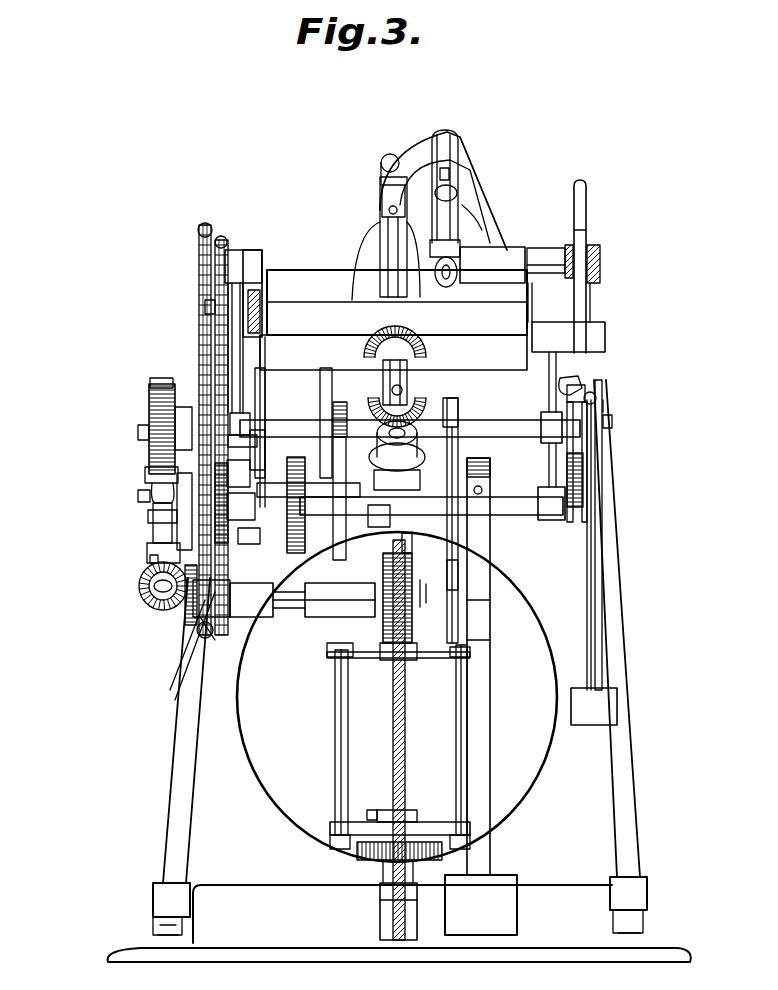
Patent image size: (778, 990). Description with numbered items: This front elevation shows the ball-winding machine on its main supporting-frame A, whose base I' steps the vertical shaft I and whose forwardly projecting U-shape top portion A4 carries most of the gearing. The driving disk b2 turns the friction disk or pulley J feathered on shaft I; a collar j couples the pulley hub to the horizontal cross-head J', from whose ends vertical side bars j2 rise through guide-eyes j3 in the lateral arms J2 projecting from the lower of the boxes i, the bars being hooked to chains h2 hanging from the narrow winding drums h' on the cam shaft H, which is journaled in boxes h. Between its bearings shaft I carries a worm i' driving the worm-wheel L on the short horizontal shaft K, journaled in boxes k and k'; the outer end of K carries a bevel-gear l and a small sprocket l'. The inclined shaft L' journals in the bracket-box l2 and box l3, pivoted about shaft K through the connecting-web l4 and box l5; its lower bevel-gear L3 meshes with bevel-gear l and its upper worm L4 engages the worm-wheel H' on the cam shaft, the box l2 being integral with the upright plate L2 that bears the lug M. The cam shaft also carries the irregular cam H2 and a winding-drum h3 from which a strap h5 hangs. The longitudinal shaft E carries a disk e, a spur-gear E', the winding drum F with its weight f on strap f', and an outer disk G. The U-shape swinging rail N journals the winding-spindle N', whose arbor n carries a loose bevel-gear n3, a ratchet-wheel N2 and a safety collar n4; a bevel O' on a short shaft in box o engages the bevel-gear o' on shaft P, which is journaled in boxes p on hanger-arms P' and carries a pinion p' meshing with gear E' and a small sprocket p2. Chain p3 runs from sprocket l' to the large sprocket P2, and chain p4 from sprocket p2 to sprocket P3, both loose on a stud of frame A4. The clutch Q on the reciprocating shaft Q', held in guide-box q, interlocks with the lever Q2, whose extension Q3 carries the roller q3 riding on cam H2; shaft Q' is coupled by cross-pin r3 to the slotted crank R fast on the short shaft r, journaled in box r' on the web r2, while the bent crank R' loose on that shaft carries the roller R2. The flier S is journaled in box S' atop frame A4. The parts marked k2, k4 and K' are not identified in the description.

The main supporting-frame A is at (399, 671).
The weight f is at (481, 905).
The narrow winding drum F is at (490, 473).
The winding-strap f' is at (490, 619).
The vertical shaft I is at (405, 740).
The base of the main-frame I' is at (384, 900).
The driving disk b2 is at (397, 697).
The friction disk or pulley J is at (389, 852).
The horizontal cross-head J' is at (363, 847).
The vertical side bars j2 is at (348, 752).
The guide-eyes or boxes j3 is at (327, 652).
The lateral bars or arms J2 is at (357, 660).
The collar j is at (410, 816).
The worm-wheel L is at (411, 598).
The boxes i is at (405, 596).
The worm i' is at (426, 603).
The short horizontal shaft K is at (253, 528).
The box k' is at (340, 591).
The box k is at (223, 640).
The rod k2 is at (338, 538).
The disk e is at (370, 522).
The longitudinal shaft E is at (432, 523).
The spur-gear E' is at (256, 547).
The boxes h is at (404, 419).
The narrow winding drums h' is at (441, 512).
The worm-wheel H' is at (301, 423).
The cam shaft H is at (627, 425).
The chain h2 is at (488, 568).
The irregular cam H2 is at (574, 522).
The narrow winding-drum h3 is at (597, 395).
The strap or belt h5 is at (592, 603).
The box k4 is at (594, 706).
The wearing roller or trundle q3 is at (605, 405).
The extension or arm Q3 is at (585, 382).
The clutch lever Q2 is at (595, 266).
The grip-socket or clutch Q is at (597, 264).
The reciprocating shaft Q' is at (566, 282).
The guide-box or bearing q is at (492, 265).
The cross-pin r3 is at (441, 279).
The crank-arm or lever R is at (445, 239).
The box r' is at (474, 186).
The short shaft r is at (473, 184).
The web or arm r2 is at (483, 214).
The bent-arm or crank R' is at (443, 180).
The flier S is at (368, 152).
The roller or trundle R2 is at (382, 205).
The box S' is at (374, 237).
The ball winding-spindle N' is at (369, 261).
The U-shape swinging rail or frame N is at (397, 302).
The ratchet-wheel N2 is at (372, 348).
The bevel-gear n3 is at (418, 364).
The safety collar or stop n4 is at (431, 375).
The spindle arbor n is at (412, 393).
The box o is at (402, 412).
The bevel-gear O' is at (403, 450).
The bevel-gear o' is at (397, 484).
The large sprocket-wheel P2 is at (210, 222).
The sprocket P3 is at (233, 248).
The drive-chain p3 is at (197, 325).
The drive-chain p4 is at (213, 306).
The U-shape top portion of the main frame A4 is at (250, 250).
The small sprocket-wheel p2 is at (170, 385).
The upright plate or bar L2 is at (165, 422).
The hub K' is at (122, 411).
The worm L4 is at (145, 478).
The inclined shaft L' is at (143, 511).
The lug M is at (150, 498).
The bracket-box l2 is at (155, 522).
The connecting-web l4 is at (150, 560).
The box l3 is at (178, 566).
The bevel-gear L3 is at (140, 594).
The bevel-gear l is at (178, 614).
The small sprocket-wheel or pinion l' is at (178, 646).
The box l5 is at (205, 655).
The disk G is at (232, 535).
The hanger-arms P' is at (273, 450).
The short longitudinal shaft P is at (271, 426).
The small spur-gear or pinion p' is at (304, 521).
The bearing-boxes p is at (291, 495).